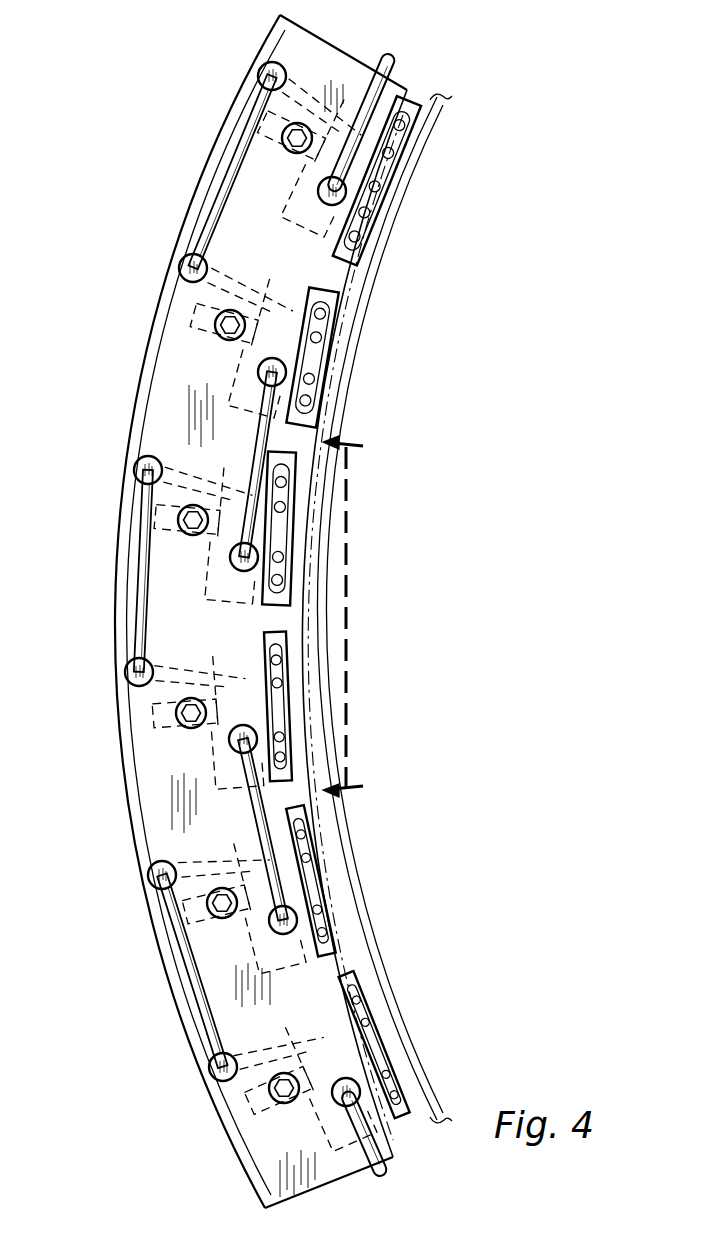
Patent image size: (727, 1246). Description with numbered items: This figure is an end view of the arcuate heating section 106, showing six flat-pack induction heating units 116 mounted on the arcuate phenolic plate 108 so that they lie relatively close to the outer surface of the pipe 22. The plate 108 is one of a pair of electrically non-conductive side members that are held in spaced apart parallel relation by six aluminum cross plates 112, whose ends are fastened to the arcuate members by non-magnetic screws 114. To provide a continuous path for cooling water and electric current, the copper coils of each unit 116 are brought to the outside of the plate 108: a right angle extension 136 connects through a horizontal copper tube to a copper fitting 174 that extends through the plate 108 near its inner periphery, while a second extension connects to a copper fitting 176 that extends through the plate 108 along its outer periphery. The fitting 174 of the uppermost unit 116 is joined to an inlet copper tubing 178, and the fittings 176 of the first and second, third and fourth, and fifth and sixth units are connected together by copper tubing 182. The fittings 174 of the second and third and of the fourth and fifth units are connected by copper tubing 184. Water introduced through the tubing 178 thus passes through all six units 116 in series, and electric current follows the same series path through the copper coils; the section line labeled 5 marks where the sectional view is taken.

The pipe 22 is at (327, 884).
The arcuate heating section 106 is at (167, 285).
The phenolic plate 108 is at (148, 397).
The aluminum cross plate 112 is at (150, 312).
The screw 114 is at (216, 332).
The induction heating unit 116 is at (393, 172).
The right angle extension 136 is at (368, 208).
The copper fitting 174 is at (318, 191).
The copper fitting 176 is at (260, 70).
The inlet copper tubing 178 is at (385, 58).
The copper tubing 182 is at (236, 150).
The copper tubing 184 is at (260, 472).
The section line 5- 5 is at (348, 619).